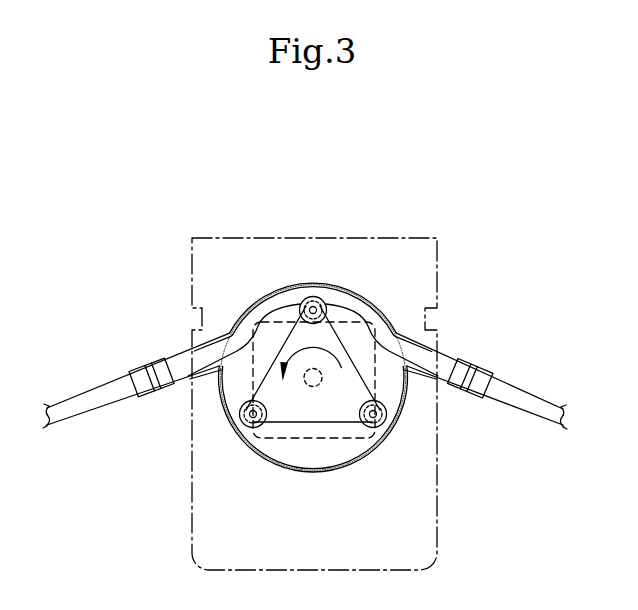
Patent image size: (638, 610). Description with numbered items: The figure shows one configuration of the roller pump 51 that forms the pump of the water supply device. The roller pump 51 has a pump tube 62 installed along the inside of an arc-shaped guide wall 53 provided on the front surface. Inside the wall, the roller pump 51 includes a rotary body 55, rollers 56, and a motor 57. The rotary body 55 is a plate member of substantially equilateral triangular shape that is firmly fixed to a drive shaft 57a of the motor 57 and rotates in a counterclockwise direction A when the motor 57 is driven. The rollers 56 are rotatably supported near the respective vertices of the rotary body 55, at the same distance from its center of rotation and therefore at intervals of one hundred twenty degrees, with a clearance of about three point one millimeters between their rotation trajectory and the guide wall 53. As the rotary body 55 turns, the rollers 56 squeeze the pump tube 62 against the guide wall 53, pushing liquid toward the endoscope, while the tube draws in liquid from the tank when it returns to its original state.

The roller pump 51 is at (122, 210).
The arc-shaped guide wall 53 is at (253, 322).
The rotary body 55 is at (316, 423).
The rollers 56 is at (313, 296).
The motor 57 is at (283, 440).
The drive shaft 57a is at (320, 384).
The pump tube 62 is at (243, 336).
The counterclockwise rotation direction A is at (323, 352).